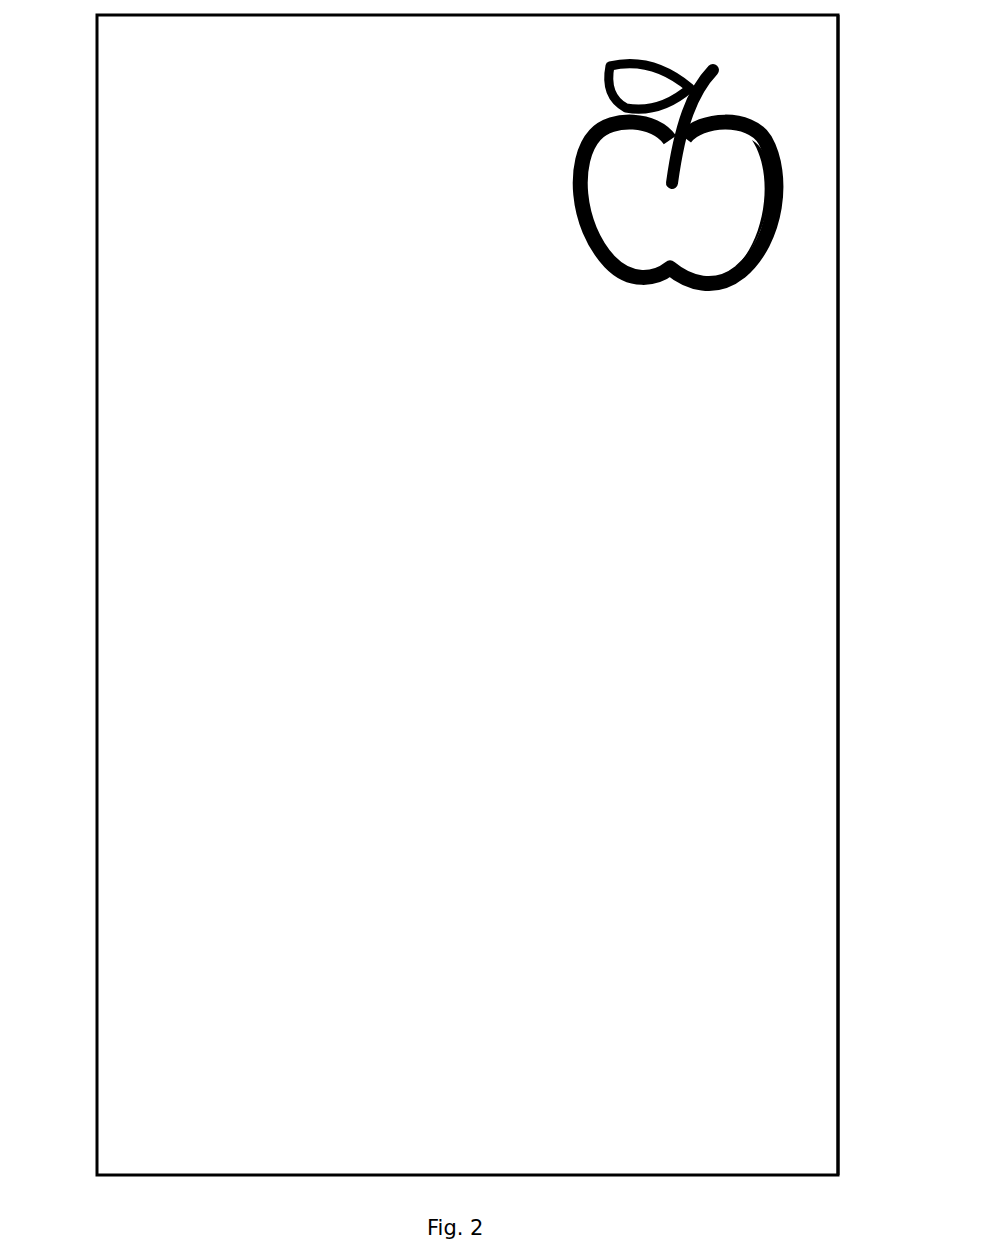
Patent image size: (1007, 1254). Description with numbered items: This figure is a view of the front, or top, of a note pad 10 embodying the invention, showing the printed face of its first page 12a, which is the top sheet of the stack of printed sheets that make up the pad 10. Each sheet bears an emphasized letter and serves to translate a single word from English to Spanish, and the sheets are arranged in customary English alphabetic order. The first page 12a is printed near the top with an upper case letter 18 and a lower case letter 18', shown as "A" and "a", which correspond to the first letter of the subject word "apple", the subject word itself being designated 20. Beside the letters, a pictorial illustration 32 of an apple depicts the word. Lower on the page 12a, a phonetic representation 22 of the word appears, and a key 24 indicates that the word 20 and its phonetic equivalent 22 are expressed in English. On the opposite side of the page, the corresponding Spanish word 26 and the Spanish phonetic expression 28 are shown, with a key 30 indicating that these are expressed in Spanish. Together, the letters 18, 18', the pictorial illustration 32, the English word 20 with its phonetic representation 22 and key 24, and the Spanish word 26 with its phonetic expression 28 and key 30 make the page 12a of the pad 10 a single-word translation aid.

The note pad 10 is at (97, 503).
The first page 12a is at (800, 510).
The upper case letter 18 is at (213, 164).
The lower case letter 18' is at (348, 164).
The pictorial illustration 32 is at (672, 333).
The subject word 20 is at (168, 1062).
The phonetic representation 22 is at (158, 975).
The key 24 is at (155, 920).
The Spanish word 26 is at (775, 1070).
The Spanish phonetic expression 28 is at (778, 983).
The Spanish key 30 is at (778, 922).